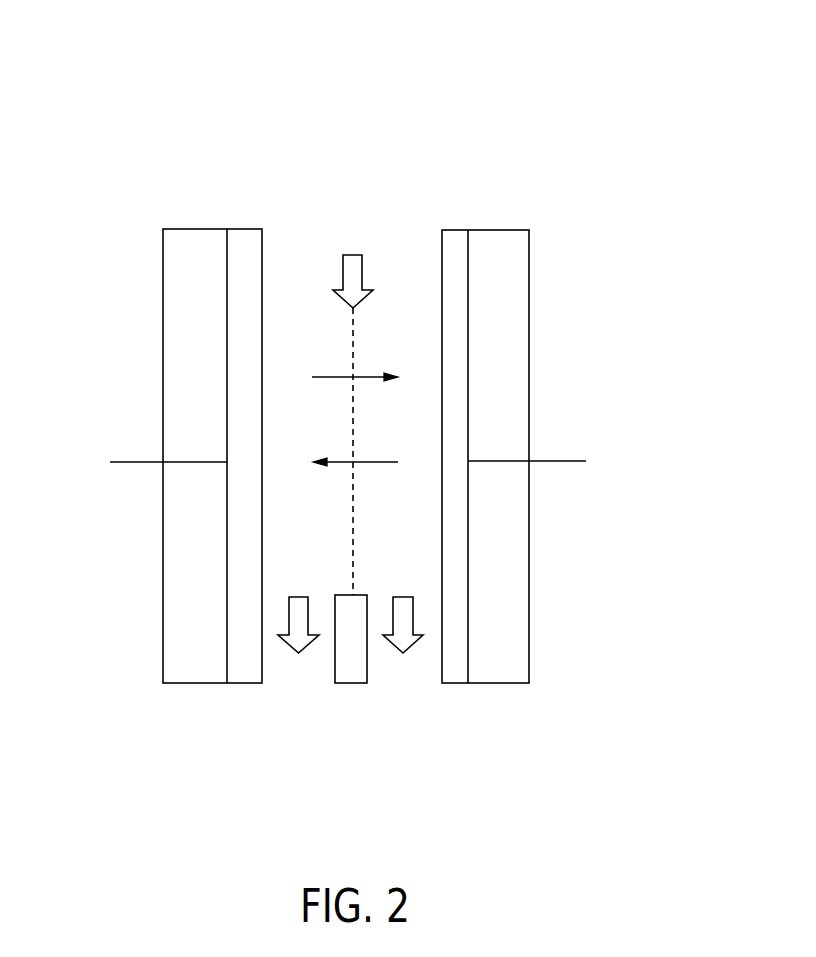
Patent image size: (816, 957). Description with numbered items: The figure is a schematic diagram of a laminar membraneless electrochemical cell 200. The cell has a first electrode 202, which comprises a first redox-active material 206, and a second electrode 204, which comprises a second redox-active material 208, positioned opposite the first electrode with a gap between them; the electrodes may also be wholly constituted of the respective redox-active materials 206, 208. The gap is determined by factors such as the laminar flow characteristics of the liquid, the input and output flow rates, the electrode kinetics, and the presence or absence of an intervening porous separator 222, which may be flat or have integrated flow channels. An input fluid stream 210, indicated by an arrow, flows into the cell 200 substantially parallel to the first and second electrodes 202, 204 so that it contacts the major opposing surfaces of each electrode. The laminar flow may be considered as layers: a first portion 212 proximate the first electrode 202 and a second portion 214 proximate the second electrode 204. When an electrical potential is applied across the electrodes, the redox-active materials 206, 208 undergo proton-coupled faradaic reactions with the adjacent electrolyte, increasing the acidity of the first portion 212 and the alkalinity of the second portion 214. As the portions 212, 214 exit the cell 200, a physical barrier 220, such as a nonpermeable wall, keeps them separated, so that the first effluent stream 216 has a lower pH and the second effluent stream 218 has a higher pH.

The laminar membraneless electrochemical cell 200 is at (640, 92).
The first electrode 202 is at (170, 326).
The second electrode 204 is at (515, 359).
The first redox-active material 206 is at (243, 238).
The second redox-active material 208 is at (456, 238).
The input fluid stream 210 is at (351, 257).
The first portion 212 is at (288, 392).
The second portion 214 is at (421, 392).
The first effluent stream 216 is at (302, 595).
The second effluent stream 218 is at (402, 595).
The physical barrier 220 is at (350, 667).
The intervening porous separator 222 is at (352, 479).